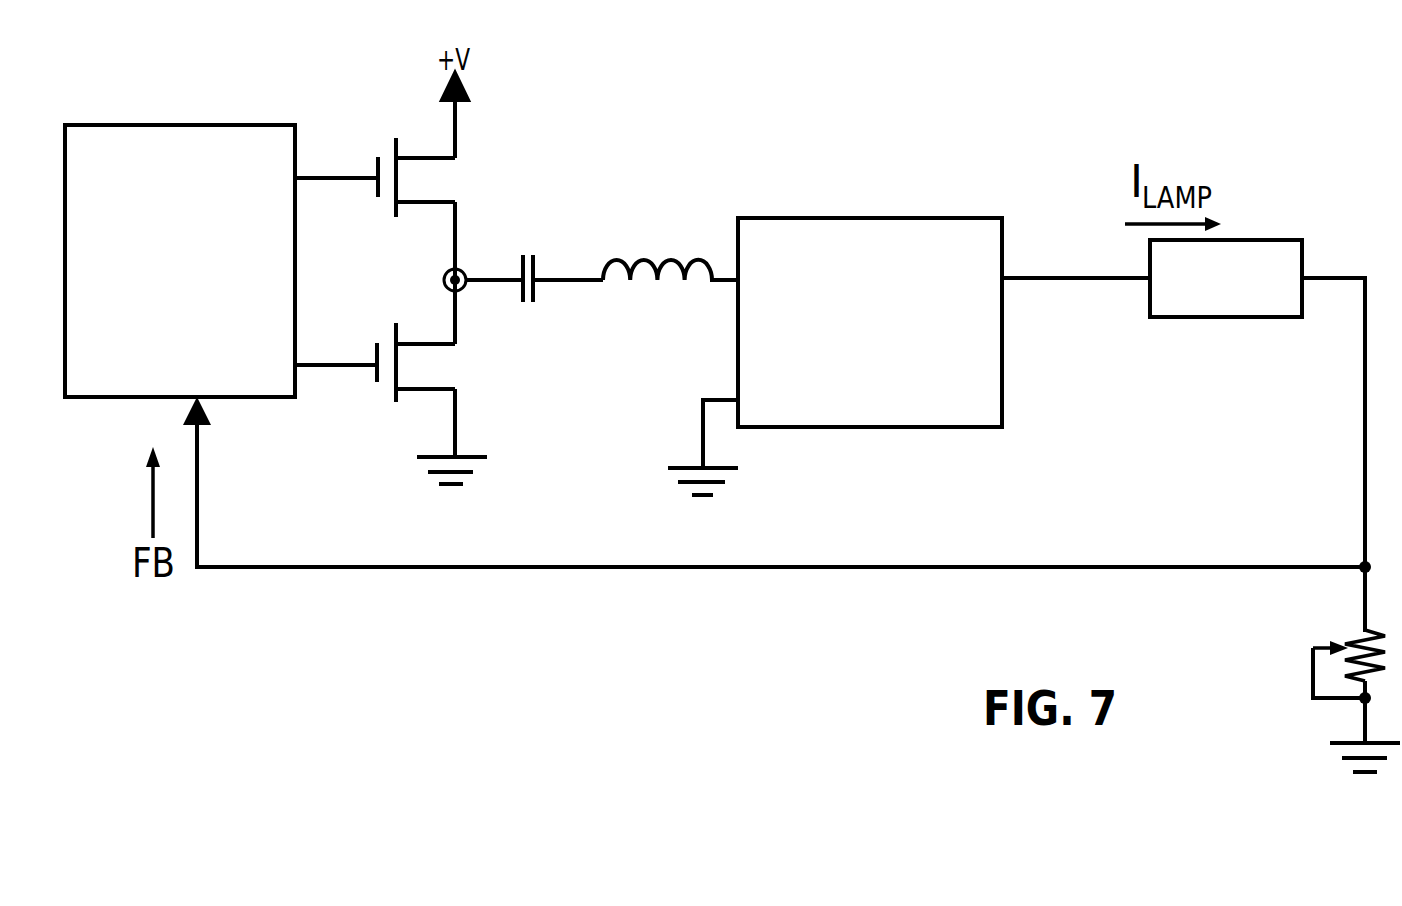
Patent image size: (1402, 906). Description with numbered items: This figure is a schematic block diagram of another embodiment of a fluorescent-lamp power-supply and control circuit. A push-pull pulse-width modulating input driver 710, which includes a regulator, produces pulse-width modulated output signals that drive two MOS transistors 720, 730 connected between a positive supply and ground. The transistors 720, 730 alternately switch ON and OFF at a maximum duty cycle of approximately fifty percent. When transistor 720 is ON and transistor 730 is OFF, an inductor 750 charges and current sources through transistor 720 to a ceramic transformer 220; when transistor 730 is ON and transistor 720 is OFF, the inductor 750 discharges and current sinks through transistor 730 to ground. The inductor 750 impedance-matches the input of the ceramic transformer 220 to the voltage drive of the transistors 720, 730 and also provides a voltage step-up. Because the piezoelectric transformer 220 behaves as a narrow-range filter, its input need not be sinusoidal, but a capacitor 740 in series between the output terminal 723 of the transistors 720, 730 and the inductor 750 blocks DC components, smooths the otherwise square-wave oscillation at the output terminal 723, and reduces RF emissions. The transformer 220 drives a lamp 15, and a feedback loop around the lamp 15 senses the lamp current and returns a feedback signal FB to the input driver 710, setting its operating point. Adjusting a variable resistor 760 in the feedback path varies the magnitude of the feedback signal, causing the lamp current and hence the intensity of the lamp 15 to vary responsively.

The input driver 710 is at (215, 125).
The MOS transistor 720 is at (442, 180).
The MOS transistor 730 is at (445, 370).
The output terminal 723 is at (443, 289).
The capacitor 740 is at (538, 272).
The inductor 750 is at (655, 253).
The ceramic transformer 220 is at (945, 218).
The lamp 15 is at (1257, 240).
The variable resistor 760 is at (1363, 640).